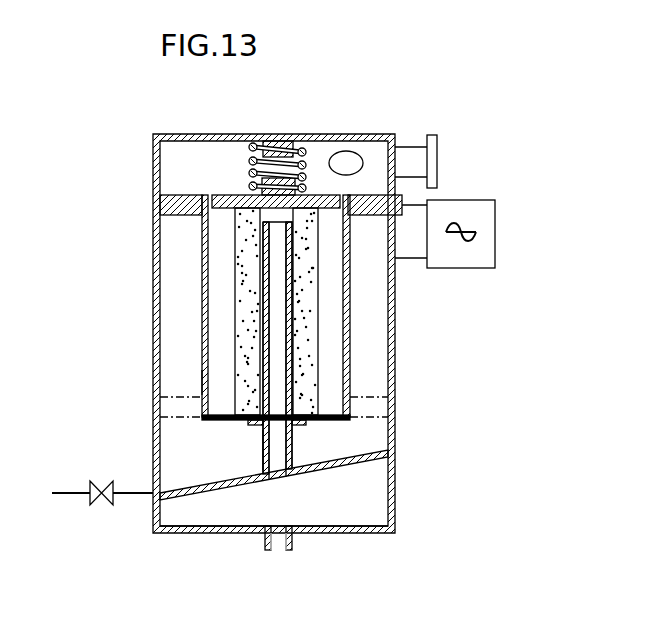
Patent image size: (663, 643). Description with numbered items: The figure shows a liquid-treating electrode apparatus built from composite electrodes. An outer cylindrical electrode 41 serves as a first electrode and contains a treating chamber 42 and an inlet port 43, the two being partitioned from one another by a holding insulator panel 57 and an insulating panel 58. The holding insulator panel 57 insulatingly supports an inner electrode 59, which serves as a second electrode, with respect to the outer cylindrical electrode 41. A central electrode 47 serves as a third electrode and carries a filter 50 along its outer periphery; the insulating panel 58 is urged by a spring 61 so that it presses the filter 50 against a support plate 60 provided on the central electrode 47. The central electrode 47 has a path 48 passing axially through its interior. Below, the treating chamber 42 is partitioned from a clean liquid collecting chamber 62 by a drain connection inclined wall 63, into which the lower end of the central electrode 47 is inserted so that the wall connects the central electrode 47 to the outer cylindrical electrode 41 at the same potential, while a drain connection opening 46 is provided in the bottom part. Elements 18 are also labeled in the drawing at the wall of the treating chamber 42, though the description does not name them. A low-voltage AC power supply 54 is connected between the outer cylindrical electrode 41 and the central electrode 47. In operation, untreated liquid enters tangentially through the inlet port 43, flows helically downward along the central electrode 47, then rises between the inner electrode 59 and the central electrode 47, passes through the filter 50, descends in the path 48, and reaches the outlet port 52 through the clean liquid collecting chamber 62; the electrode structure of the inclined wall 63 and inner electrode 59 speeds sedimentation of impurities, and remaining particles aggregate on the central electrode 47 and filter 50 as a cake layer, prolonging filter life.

The seal / gasket 18 is at (363, 212).
The outer cylindrical electrode 41 is at (153, 290).
The treating chamber 42 is at (370, 345).
The inlet port 43 is at (355, 152).
The drain connection opening 46 is at (126, 500).
The central electrode 47 is at (262, 448).
The path 48 is at (275, 463).
The filter 50 is at (235, 347).
The outlet port 52 is at (293, 548).
The low-voltage AC power supply 54 is at (485, 250).
The holding insulator panel 57 is at (183, 213).
The insulating panel 58 is at (228, 194).
The inner electrode 59 is at (202, 380).
The support plate 60 is at (300, 423).
The spring 61 is at (297, 147).
The clean liquid collecting chamber 62 is at (375, 505).
The drain connection inclined wall 63 is at (246, 485).